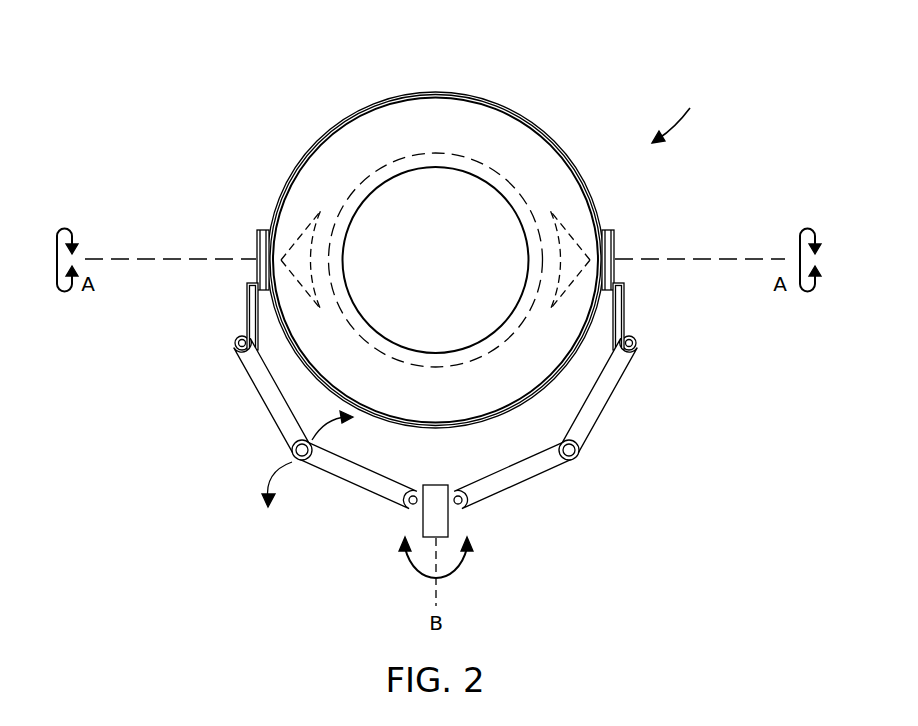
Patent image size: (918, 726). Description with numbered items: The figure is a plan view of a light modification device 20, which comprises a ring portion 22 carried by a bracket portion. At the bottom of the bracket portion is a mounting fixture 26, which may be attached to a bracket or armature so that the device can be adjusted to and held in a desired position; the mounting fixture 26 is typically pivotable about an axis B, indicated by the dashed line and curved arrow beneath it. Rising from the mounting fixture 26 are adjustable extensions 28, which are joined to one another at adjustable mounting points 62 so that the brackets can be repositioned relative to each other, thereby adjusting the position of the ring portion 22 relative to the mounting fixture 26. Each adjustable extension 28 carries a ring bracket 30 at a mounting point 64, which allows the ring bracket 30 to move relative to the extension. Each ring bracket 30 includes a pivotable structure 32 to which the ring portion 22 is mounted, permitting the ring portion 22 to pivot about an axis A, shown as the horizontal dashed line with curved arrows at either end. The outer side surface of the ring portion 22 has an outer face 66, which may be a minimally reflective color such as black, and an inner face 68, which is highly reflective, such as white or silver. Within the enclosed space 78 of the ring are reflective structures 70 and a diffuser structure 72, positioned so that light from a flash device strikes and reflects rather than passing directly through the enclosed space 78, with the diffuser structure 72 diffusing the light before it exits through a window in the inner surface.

The light modification device 20 is at (674, 110).
The ring portion 22 is at (398, 93).
The mounting fixture 26 is at (450, 516).
The adjustable extension 28 is at (534, 482).
The ring bracket 30 is at (245, 300).
The pivotable structure 32 is at (266, 228).
The adjustable mounting point 62 is at (304, 461).
The mounting point 64 is at (240, 352).
The outer face 66 is at (478, 95).
The inner face 68 is at (330, 150).
The reflective structure 70 is at (586, 266).
The diffuser structure 72 is at (563, 220).
The enclosed space 78 is at (504, 150).